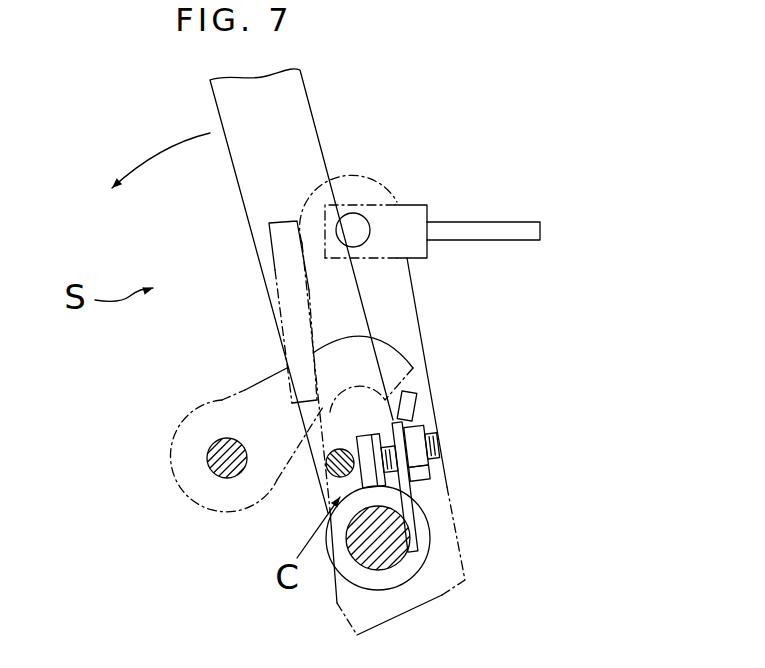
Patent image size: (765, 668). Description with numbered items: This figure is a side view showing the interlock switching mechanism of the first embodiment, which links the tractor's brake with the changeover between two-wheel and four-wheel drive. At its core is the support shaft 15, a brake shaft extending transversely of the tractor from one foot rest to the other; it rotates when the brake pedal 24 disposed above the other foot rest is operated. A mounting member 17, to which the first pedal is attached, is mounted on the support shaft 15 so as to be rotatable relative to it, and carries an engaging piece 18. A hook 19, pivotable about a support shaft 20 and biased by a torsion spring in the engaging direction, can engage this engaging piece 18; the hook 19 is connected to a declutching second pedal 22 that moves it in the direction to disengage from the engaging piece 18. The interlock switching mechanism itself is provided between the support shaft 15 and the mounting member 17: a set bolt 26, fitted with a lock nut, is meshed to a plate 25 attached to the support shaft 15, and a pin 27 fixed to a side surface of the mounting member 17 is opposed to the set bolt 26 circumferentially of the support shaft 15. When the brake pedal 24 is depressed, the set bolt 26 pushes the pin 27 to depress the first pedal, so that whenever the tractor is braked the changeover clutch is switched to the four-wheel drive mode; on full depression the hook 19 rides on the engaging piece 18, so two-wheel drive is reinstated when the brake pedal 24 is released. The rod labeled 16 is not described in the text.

The support shaft 15 is at (388, 566).
The rod 16 is at (505, 222).
The mounting member 17 is at (405, 295).
The engaging piece 18 is at (413, 408).
The hook 19 is at (403, 354).
The support shaft 20 is at (227, 438).
The second pedal 22 is at (280, 273).
The brake pedal 24 is at (310, 118).
The plate 25 is at (423, 485).
The set bolt 26 is at (367, 436).
The pin 27 is at (330, 473).